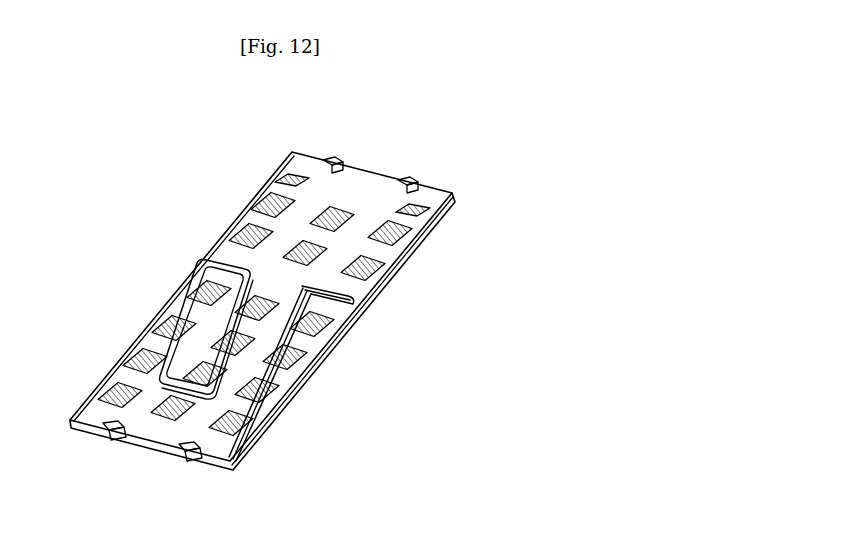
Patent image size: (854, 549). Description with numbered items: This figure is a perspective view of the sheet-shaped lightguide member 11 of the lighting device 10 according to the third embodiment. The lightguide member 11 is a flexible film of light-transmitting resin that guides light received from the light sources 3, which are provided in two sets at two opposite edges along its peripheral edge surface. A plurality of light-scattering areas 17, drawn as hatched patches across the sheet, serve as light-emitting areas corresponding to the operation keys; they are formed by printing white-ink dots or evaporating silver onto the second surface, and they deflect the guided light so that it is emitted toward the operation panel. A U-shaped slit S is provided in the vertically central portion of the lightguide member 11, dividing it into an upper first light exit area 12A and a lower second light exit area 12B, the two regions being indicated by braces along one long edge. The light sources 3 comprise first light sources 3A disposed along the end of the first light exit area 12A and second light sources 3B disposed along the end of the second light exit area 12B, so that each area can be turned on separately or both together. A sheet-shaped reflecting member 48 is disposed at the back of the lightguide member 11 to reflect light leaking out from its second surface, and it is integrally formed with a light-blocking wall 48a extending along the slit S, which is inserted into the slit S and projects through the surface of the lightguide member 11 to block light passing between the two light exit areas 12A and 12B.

The lighting device 10 is at (453, 158).
The sheet-shaped lightguide member 11 is at (402, 283).
The first light exit area 12A is at (266, 160).
The second light exit area 12B is at (178, 262).
The light sources 3 is at (330, 154).
The first light sources 3A is at (370, 175).
The second light sources 3B is at (152, 441).
The light-scattering areas 17 is at (423, 207).
The sheet-shaped reflecting member 48 is at (250, 460).
The light-blocking wall 48a is at (290, 336).
The U-shaped slit S is at (357, 298).